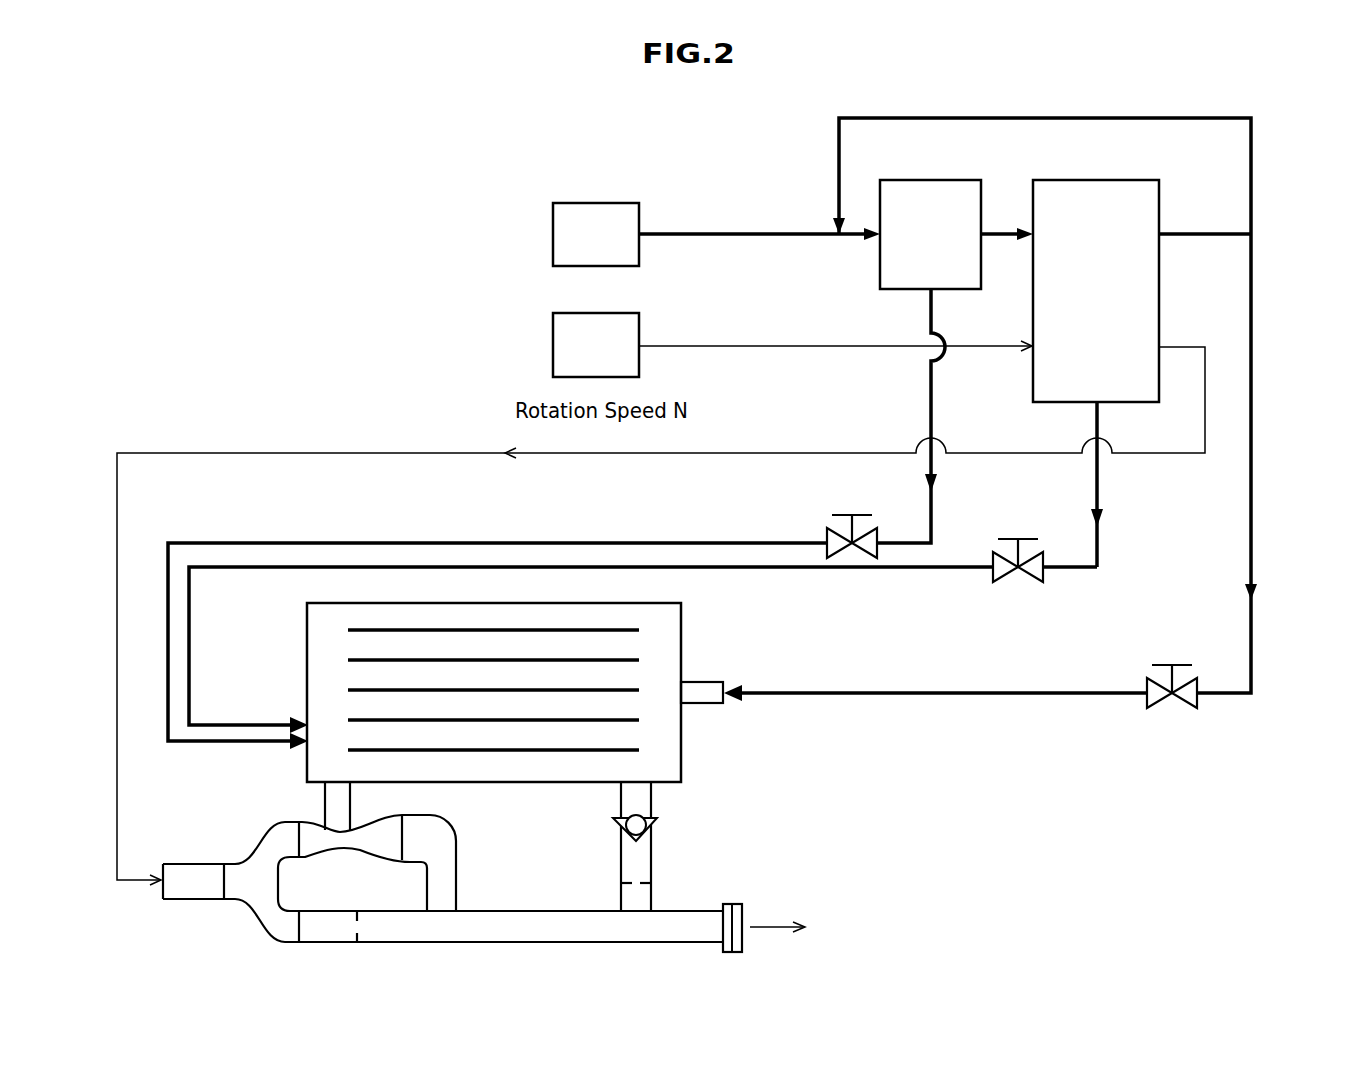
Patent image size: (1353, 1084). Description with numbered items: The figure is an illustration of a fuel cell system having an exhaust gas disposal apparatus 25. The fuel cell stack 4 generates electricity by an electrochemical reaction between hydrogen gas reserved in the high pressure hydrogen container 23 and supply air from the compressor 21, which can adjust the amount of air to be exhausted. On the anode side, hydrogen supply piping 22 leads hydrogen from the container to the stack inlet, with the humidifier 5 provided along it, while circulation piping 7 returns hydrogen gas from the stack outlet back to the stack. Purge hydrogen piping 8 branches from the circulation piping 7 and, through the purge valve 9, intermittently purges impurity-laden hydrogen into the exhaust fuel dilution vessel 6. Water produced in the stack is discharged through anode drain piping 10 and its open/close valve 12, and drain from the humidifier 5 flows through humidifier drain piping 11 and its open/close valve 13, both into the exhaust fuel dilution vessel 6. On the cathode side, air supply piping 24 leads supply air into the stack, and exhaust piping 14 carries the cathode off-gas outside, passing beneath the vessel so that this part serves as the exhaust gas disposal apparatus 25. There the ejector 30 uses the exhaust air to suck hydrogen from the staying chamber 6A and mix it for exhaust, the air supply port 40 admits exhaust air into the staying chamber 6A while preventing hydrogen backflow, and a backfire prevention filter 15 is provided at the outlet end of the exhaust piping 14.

The fuel cell stack 4 is at (1127, 180).
The humidifier 5 is at (950, 180).
The exhaust fuel dilution vessel 6 is at (605, 637).
The staying chamber 6A is at (328, 672).
The circulation piping 7 is at (1253, 172).
The purge hydrogen piping 8 is at (1117, 692).
The purge valve 9 is at (1203, 689).
The anode drain piping 10 is at (964, 565).
The humidifier drain piping 11 is at (797, 541).
The open/close valve 12 is at (1047, 560).
The open/close valve 13 is at (882, 536).
The exhaust piping 14 is at (264, 452).
The backfire prevention filter 15 is at (727, 903).
The compressor 21 is at (552, 346).
The hydrogen supply piping 22 is at (762, 233).
The high pressure hydrogen container 23 is at (552, 236).
The air supply piping 24 is at (827, 345).
The exhaust gas disposal apparatus 25 is at (716, 753).
The ejector 30 is at (307, 817).
The air supply port 40 is at (616, 848).